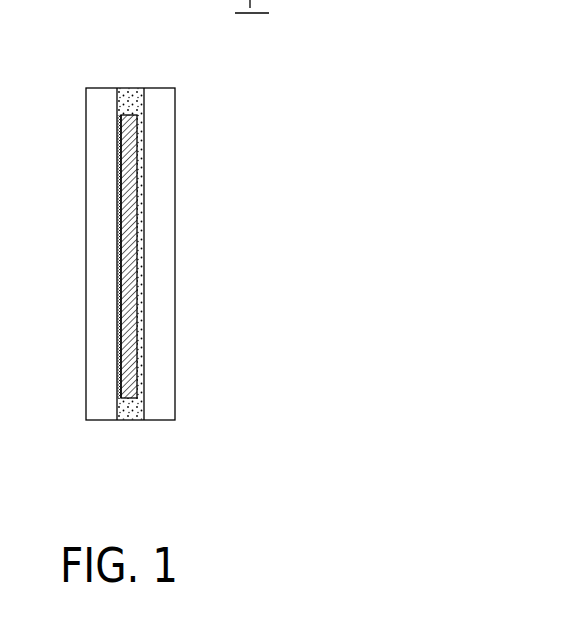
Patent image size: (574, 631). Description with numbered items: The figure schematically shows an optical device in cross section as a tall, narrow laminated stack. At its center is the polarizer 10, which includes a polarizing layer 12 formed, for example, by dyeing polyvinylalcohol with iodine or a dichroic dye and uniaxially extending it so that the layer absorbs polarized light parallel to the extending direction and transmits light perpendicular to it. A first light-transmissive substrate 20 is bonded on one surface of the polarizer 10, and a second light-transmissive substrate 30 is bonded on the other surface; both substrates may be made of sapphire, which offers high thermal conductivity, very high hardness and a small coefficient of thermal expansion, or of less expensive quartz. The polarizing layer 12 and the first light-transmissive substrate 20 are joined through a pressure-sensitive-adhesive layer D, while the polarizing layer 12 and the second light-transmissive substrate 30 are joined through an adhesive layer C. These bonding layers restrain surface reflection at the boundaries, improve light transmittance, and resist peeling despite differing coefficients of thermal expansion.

The polarizer 10 is at (143, 221).
The polarizing layer 12 is at (134, 332).
The first light-transmissive substrate 20 is at (102, 88).
The second light-transmissive substrate 30 is at (160, 88).
The pressure-sensitive-adhesive layer D is at (117, 152).
The adhesive layer C is at (125, 421).